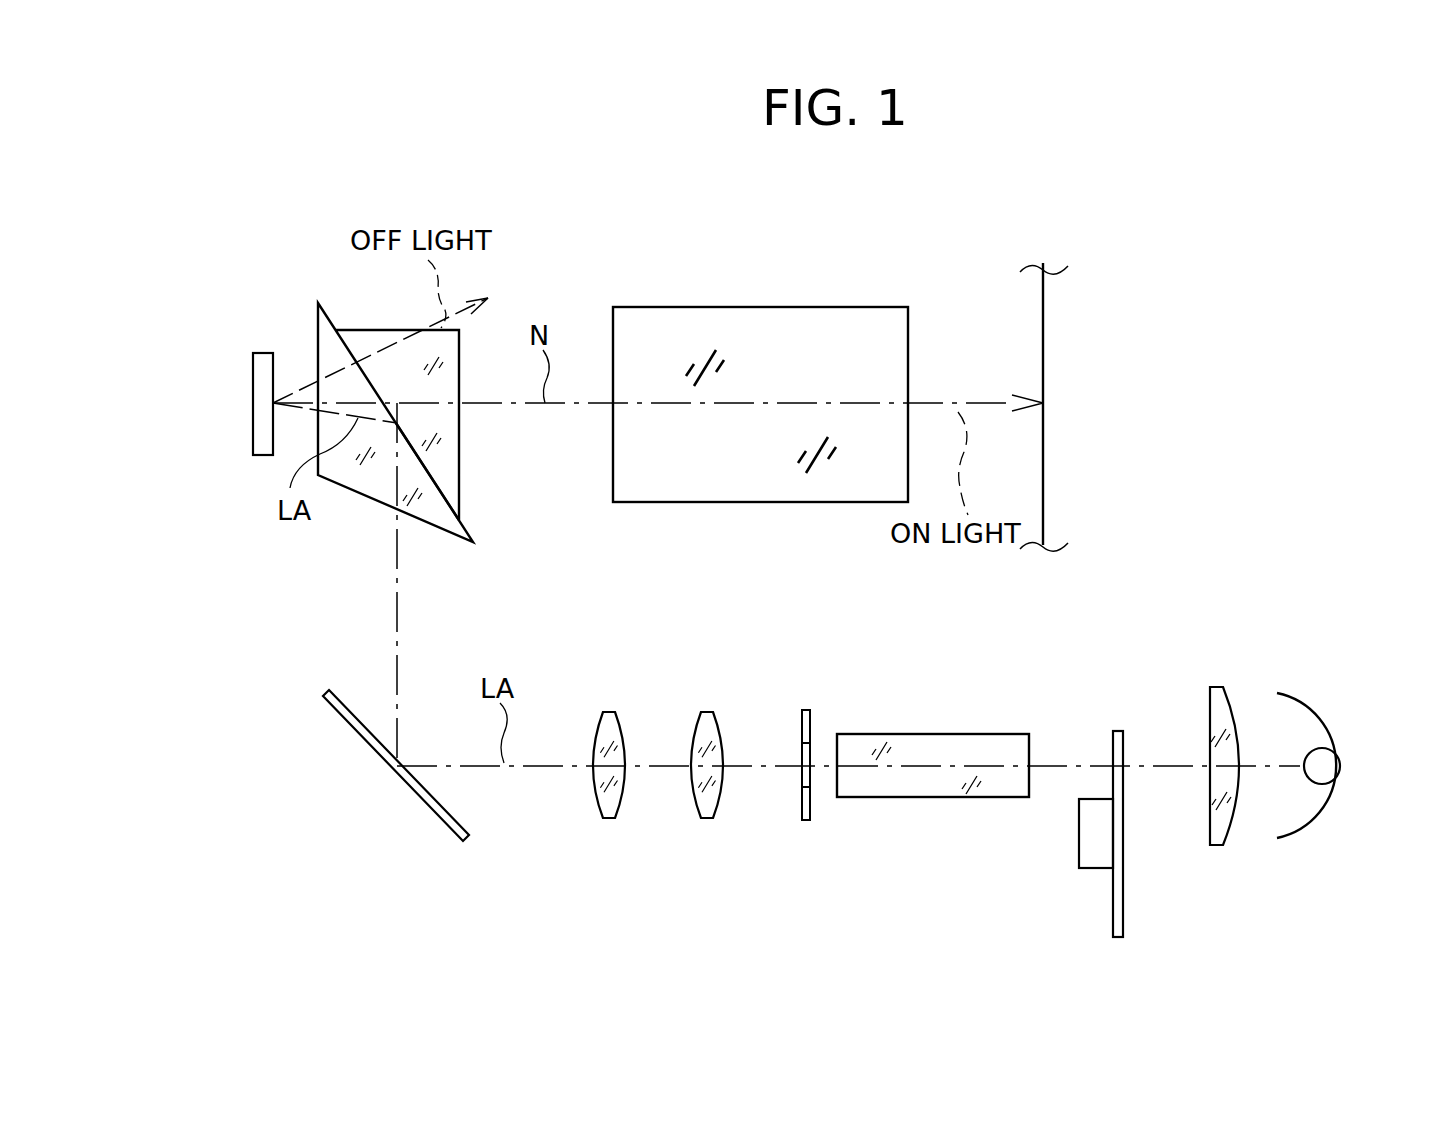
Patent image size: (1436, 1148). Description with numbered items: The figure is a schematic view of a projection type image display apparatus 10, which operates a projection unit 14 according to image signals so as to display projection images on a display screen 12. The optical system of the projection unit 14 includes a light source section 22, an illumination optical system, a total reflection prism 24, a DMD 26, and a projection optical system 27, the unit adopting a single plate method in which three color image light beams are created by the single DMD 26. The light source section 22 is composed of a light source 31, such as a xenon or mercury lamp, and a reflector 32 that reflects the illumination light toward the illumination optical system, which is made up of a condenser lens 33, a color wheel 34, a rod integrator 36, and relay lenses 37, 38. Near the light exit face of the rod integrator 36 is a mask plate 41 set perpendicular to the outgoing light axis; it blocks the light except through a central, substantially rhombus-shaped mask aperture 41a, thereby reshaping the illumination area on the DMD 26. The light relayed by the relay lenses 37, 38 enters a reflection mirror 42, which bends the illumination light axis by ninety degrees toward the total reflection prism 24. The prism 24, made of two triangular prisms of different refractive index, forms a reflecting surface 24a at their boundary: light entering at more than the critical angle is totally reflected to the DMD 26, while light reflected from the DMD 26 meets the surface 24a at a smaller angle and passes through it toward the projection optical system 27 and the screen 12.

The projection type image display apparatus 10 is at (570, 182).
The display screen 12 is at (1043, 330).
The projection unit 14 is at (245, 675).
The light source section 22 is at (1328, 828).
The total reflection prism 24 is at (358, 498).
The reflecting surface 24a is at (443, 498).
The DMD 26 is at (253, 438).
The projection optical system 27 is at (738, 307).
The light source 31 is at (1315, 778).
The reflector 32 is at (1305, 700).
The condenser lens 33 is at (1213, 687).
The color wheel 34 is at (1123, 912).
The rod integrator 36 is at (915, 734).
The relay lens 37 is at (707, 820).
The relay lens 38 is at (609, 820).
The mask plate 41 is at (805, 710).
The mask aperture 41a is at (802, 758).
The reflection mirror 42 is at (425, 808).